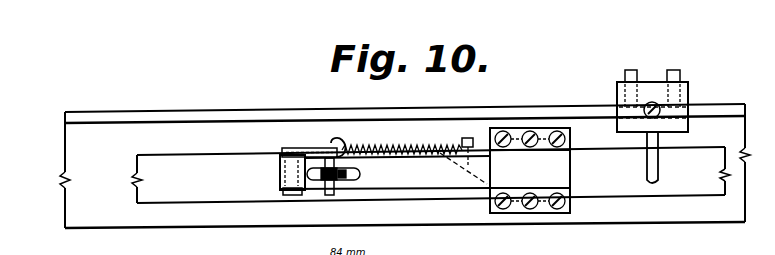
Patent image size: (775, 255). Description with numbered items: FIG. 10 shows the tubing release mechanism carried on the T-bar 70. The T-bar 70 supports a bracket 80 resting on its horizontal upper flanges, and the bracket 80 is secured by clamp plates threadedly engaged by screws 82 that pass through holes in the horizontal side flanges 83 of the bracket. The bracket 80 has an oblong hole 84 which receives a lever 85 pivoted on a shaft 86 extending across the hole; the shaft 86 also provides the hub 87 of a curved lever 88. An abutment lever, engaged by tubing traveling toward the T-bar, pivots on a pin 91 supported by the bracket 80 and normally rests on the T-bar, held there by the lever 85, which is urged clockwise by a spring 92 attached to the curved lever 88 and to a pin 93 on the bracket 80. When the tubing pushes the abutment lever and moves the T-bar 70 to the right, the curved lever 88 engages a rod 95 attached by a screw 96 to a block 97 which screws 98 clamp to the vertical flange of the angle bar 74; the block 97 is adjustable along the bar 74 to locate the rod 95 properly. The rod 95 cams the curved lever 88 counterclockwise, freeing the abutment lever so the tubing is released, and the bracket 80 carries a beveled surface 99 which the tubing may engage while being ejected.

The T-bar 70 is at (716, 147).
The angle bar 74 is at (732, 105).
The bracket 80 is at (434, 190).
The screws 82 is at (532, 148).
The horizontal side flanges 83 is at (571, 133).
The oblong hole 84 is at (361, 174).
The lever 85 is at (346, 180).
The shaft 86 is at (331, 195).
The hub 87 is at (341, 133).
The curved lever 88 is at (302, 149).
The pin 91 is at (288, 192).
The spring 92 is at (372, 147).
The pin 93 is at (471, 138).
The rod 95 is at (659, 160).
The screw 96 is at (648, 118).
The block 97 is at (616, 93).
The screws 98 is at (629, 70).
The beveled surface 99 is at (473, 184).